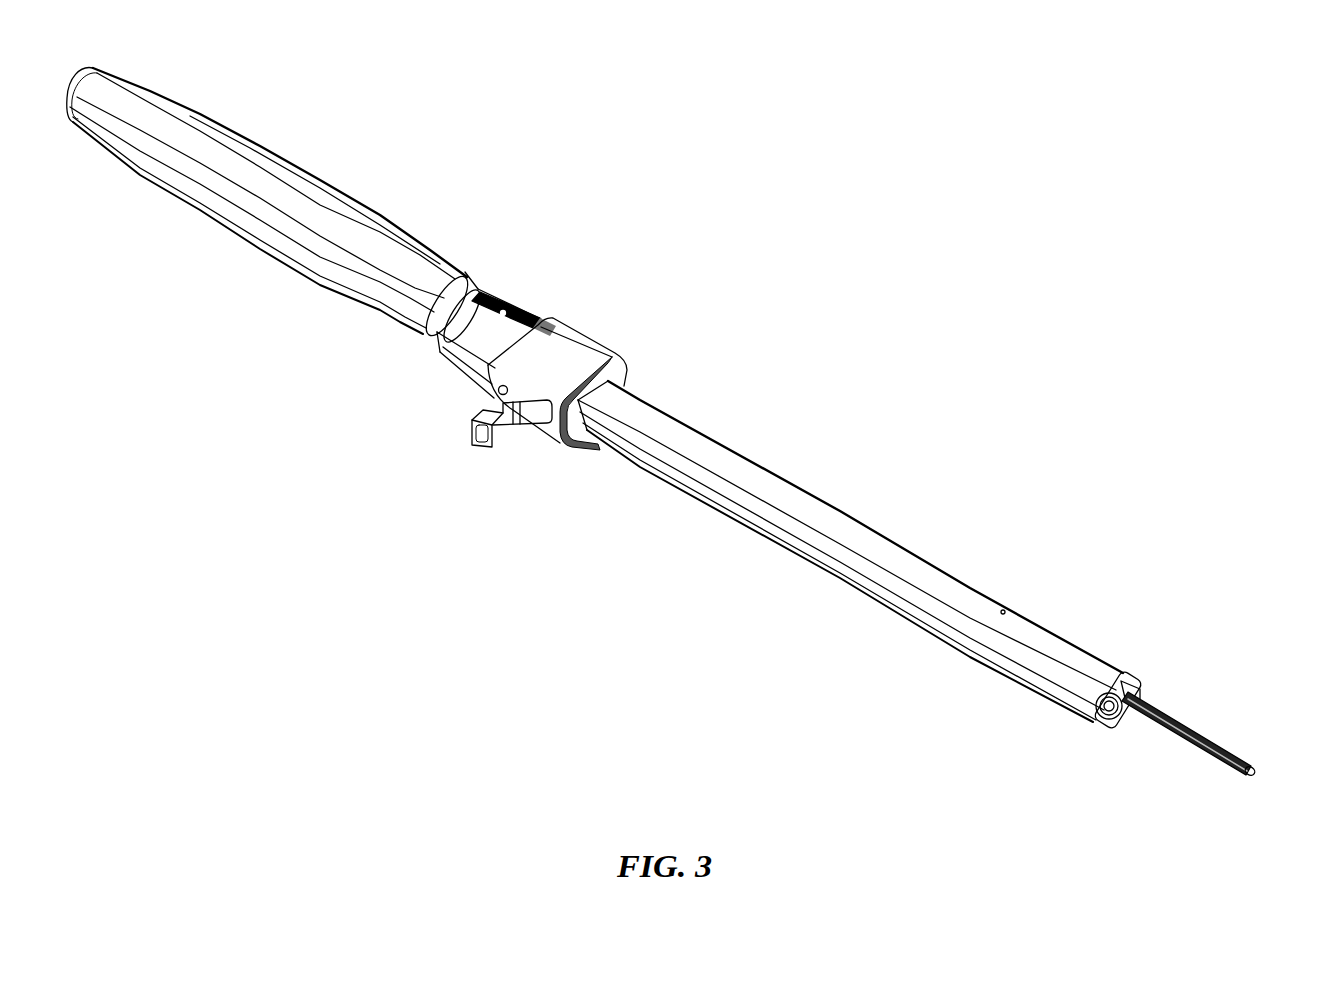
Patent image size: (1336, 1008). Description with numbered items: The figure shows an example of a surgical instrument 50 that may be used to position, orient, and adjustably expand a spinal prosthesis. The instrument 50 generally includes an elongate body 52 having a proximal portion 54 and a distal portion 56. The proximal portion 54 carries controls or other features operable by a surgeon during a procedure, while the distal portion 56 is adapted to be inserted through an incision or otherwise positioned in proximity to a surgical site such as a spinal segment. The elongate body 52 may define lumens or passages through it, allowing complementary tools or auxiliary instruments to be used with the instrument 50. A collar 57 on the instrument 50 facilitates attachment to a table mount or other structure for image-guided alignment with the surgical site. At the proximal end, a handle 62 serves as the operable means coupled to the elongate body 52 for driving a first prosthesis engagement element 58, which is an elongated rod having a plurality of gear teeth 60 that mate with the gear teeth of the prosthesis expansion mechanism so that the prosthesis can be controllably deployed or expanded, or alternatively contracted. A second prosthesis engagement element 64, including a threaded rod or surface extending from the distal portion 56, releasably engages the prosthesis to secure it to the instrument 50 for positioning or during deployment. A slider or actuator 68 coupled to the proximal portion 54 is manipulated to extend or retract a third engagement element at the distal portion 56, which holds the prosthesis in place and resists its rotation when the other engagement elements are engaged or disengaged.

The surgical instrument 50 is at (830, 303).
The elongate body 52 is at (897, 557).
The proximal portion 54 is at (372, 369).
The distal portion 56 is at (1168, 690).
The collar 57 is at (563, 352).
The first prosthesis engagement element 58 is at (1255, 770).
The gear teeth 60 is at (1225, 770).
The handle 62 is at (243, 153).
The second prosthesis engagement element 64 is at (1121, 710).
The slider or actuator 68 is at (500, 305).